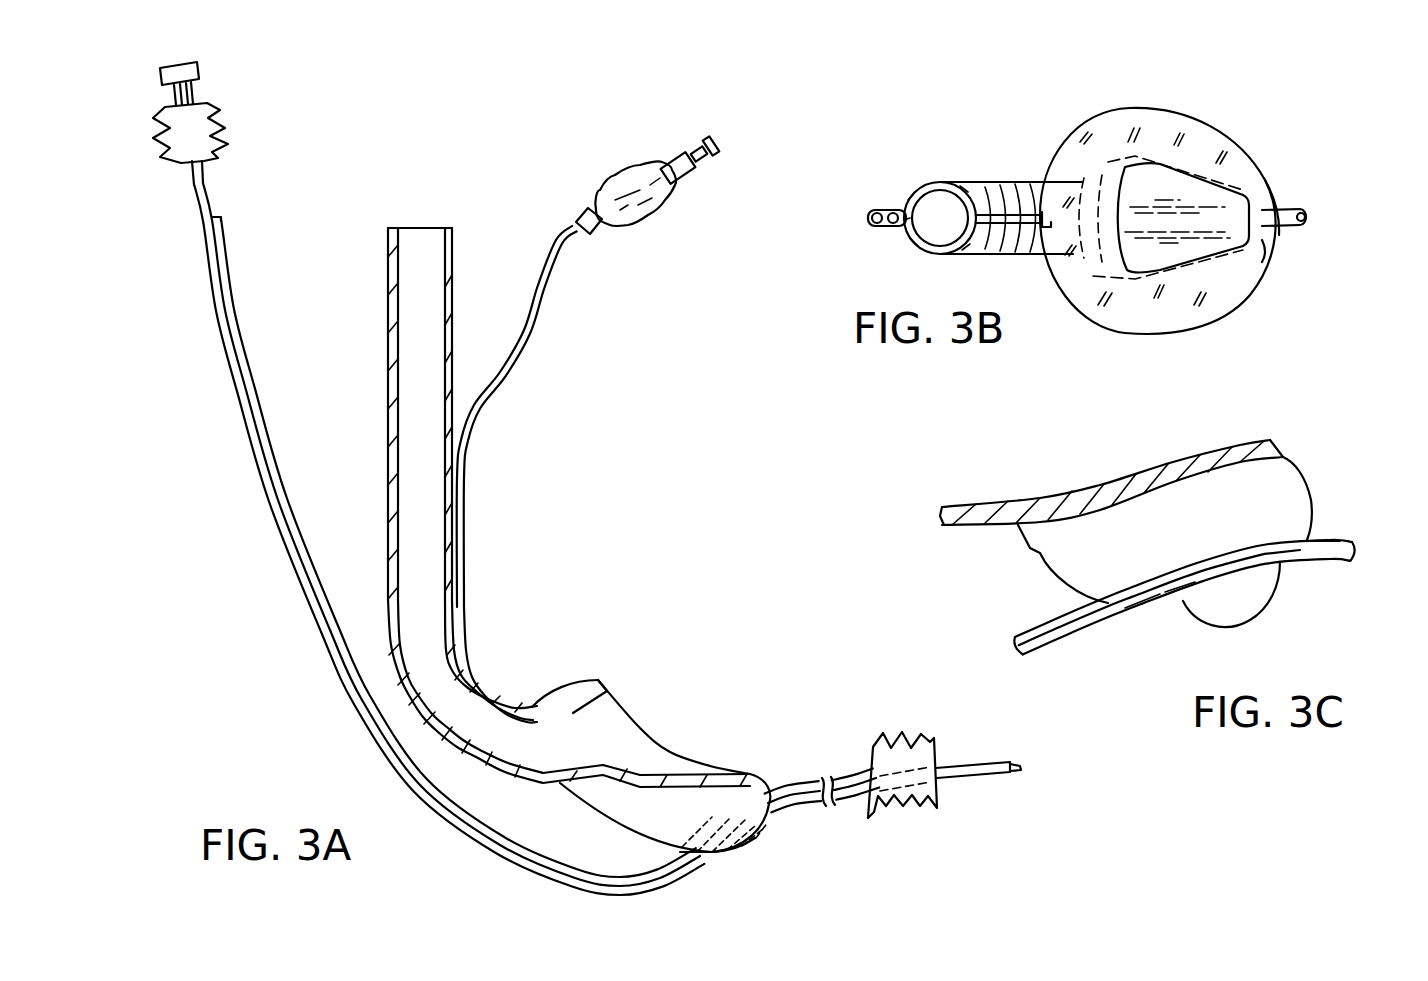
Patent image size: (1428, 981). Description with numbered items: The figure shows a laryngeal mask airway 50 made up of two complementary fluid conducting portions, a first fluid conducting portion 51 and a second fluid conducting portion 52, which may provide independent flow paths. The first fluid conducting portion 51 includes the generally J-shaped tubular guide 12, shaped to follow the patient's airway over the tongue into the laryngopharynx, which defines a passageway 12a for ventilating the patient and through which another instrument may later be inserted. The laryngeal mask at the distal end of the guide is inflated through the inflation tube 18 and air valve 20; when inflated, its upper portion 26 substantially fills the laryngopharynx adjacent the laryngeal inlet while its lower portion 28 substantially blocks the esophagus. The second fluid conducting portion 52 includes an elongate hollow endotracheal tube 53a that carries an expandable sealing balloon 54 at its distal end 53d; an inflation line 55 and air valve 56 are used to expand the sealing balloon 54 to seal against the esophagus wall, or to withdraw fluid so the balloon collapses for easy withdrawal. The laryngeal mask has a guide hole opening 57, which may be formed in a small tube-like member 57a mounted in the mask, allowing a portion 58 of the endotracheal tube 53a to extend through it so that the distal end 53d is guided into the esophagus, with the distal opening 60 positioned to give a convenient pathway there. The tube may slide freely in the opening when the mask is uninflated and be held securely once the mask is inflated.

In FIG. 3A, the tubular guide 12 is at (569, 507).
In FIG. 3B, the tubular guide 12 is at (975, 185).
In FIG. 3C, the tubular guide 12 is at (1190, 458).
In FIG. 3A, the passageway 12a is at (425, 328).
In FIG. 3B, the passageway 12a is at (940, 207).
In FIG. 3A, the inflation tube 18 is at (540, 287).
In FIG. 3B, the inflation tube 18 is at (1000, 203).
In FIG. 3A, the air valve 20 is at (647, 210).
In FIG. 3A, the upper portion 26 is at (560, 682).
In FIG. 3B, the upper portion 26 is at (1082, 116).
In FIG. 3C, the upper portion 26 is at (1129, 587).
In FIG. 3A, the lower portion 28 is at (760, 783).
In FIG. 3B, the lower portion 28 is at (1253, 157).
In FIG. 3C, the lower portion 28 is at (1308, 472).
In FIG. 3A, the laryngeal mask airway 50 is at (569, 461).
In FIG. 3B, the laryngeal mask airway 50 is at (1067, 172).
In FIG. 3A, the first fluid conducting portion 51 is at (685, 738).
In FIG. 3B, the first fluid conducting portion 51 is at (1145, 200).
In FIG. 3A, the second fluid conducting portion 52 is at (588, 478).
In FIG. 3A, the endotracheal tube 53a is at (225, 250).
In FIG. 3B, the endotracheal tube 53a is at (896, 232).
In FIG. 3C, the endotracheal tube 53a is at (1056, 640).
In FIG. 3A, the distal end 53d is at (955, 763).
In FIG. 3C, the distal end 53d is at (1340, 570).
In FIG. 3A, the sealing balloon 54 is at (907, 740).
In FIG. 3A, the inflation line 55 is at (212, 297).
In FIG. 3B, the inflation line 55 is at (870, 216).
In FIG. 3A, the air valve 56 is at (162, 145).
In FIG. 3A, the guide hole opening 57 is at (727, 840).
In FIG. 3C, the guide hole opening 57 is at (1157, 605).
In FIG. 3A, the tube-like member 57a is at (755, 838).
In FIG. 3B, the tube-like member 57a is at (1262, 253).
In FIG. 3C, the tube-like member 57a is at (1183, 602).
In FIG. 3A, the portion 58 is at (712, 853).
In FIG. 3C, the portion 58 is at (1267, 563).
In FIG. 3A, the distal opening 60 is at (980, 767).